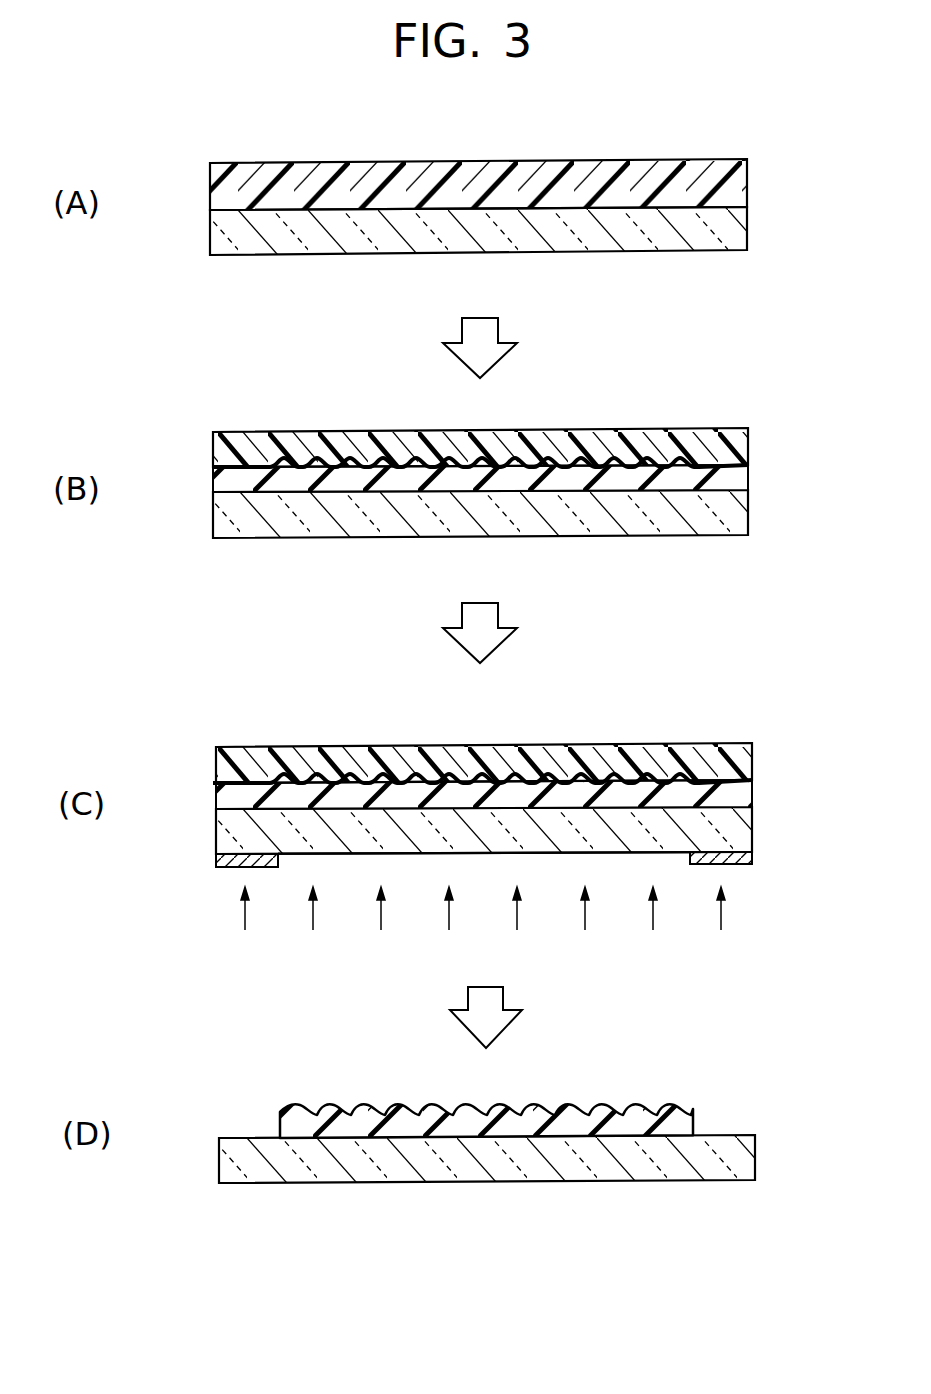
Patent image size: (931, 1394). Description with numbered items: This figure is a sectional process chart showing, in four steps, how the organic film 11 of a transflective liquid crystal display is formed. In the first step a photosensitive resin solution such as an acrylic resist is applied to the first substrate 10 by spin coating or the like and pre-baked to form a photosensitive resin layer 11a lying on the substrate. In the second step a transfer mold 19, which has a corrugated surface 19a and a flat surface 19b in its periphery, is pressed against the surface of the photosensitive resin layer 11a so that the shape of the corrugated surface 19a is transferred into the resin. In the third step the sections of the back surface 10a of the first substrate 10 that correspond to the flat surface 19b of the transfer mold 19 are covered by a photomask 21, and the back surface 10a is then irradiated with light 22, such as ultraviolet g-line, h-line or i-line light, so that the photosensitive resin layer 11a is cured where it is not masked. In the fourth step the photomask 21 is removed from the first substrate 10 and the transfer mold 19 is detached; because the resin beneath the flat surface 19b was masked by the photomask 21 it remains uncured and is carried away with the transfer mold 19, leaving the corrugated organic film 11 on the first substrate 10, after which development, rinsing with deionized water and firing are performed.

The first substrate 10 is at (722, 228).
The back surface 10a is at (343, 855).
The organic film 11 is at (676, 1121).
The photosensitive resin layer 11a is at (720, 188).
The transfer mold 19 is at (722, 445).
The corrugated surface 19a is at (250, 488).
The flat surface 19b is at (694, 458).
The photomask 21 is at (216, 866).
The light 22 is at (723, 917).